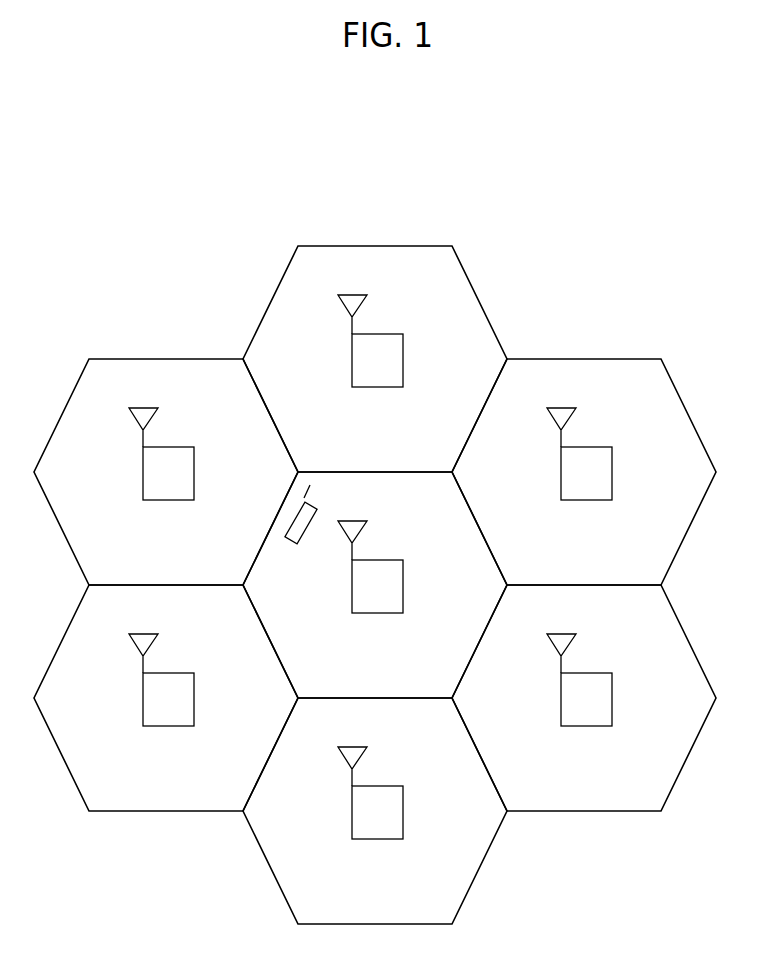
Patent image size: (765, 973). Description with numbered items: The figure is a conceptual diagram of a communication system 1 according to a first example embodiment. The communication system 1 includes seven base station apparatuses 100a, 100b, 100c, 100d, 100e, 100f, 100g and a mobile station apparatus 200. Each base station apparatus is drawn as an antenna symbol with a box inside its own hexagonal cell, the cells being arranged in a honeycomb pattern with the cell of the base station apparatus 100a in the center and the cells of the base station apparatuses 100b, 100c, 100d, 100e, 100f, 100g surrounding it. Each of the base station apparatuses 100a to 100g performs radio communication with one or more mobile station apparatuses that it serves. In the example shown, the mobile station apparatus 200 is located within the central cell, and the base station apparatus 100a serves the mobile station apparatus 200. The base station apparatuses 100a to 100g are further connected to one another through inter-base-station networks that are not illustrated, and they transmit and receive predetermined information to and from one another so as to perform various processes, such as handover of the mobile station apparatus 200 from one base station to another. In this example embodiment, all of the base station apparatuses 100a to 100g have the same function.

The communication system 1 is at (590, 225).
The base station apparatus 100a is at (383, 560).
The base station apparatus 100b is at (383, 334).
The base station apparatus 100c is at (592, 447).
The base station apparatus 100d is at (592, 673).
The base station apparatus 100e is at (383, 786).
The base station apparatus 100f is at (174, 673).
The base station apparatus 100g is at (174, 447).
The mobile station apparatus 200 is at (288, 546).